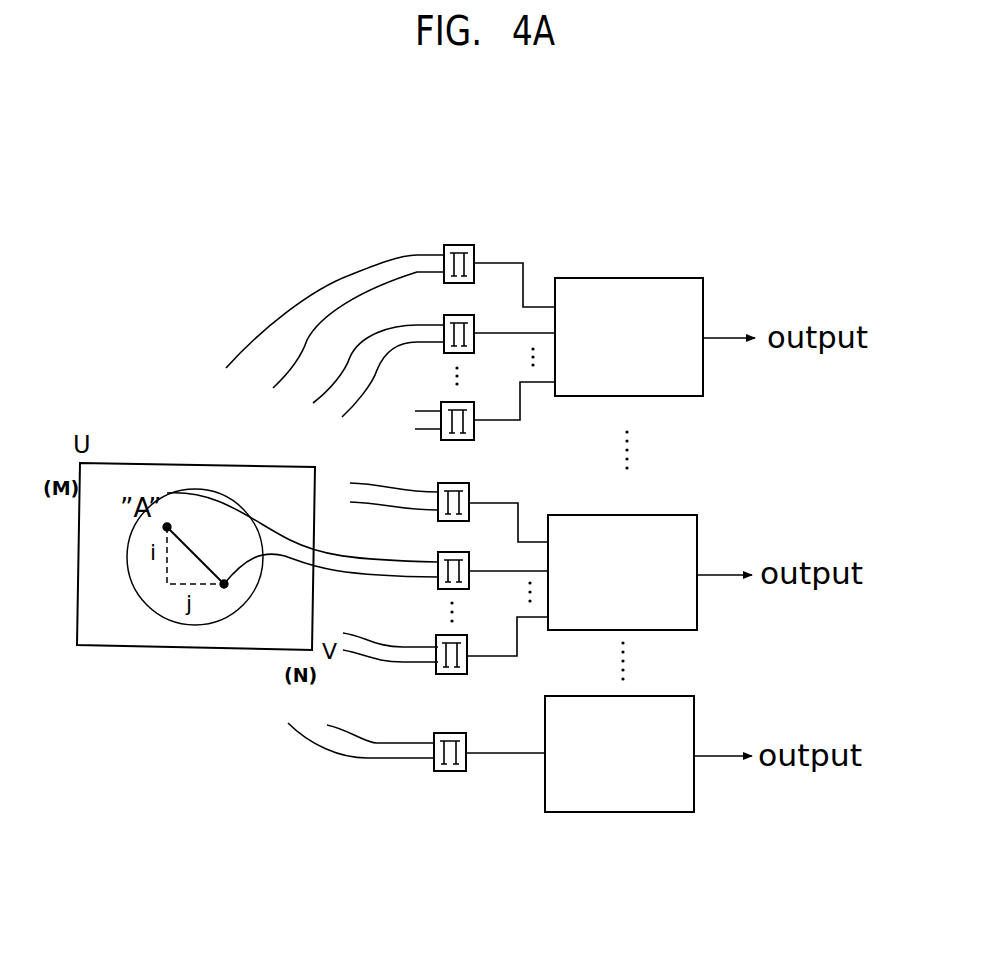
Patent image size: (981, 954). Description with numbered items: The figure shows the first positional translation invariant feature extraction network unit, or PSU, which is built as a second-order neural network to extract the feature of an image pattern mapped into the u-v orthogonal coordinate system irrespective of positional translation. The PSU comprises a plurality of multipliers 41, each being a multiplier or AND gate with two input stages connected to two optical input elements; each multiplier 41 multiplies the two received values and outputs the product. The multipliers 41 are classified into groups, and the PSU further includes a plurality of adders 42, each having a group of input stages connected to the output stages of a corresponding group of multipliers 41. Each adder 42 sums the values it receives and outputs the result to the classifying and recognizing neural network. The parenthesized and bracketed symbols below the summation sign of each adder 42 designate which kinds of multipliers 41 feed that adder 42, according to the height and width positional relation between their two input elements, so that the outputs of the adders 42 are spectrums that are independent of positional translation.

The multiplier 41 is at (473, 245).
The adder 42 is at (643, 278).
The first positional translation invariant feature extraction network unit PSU is at (662, 186).